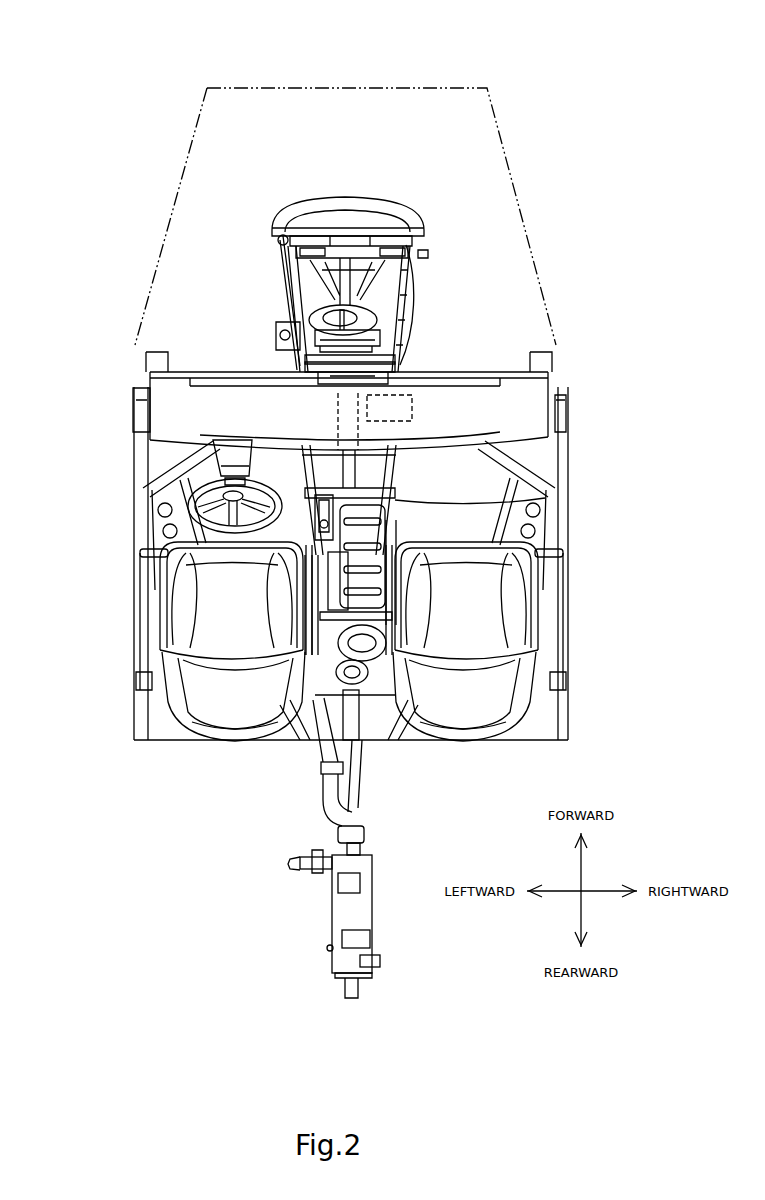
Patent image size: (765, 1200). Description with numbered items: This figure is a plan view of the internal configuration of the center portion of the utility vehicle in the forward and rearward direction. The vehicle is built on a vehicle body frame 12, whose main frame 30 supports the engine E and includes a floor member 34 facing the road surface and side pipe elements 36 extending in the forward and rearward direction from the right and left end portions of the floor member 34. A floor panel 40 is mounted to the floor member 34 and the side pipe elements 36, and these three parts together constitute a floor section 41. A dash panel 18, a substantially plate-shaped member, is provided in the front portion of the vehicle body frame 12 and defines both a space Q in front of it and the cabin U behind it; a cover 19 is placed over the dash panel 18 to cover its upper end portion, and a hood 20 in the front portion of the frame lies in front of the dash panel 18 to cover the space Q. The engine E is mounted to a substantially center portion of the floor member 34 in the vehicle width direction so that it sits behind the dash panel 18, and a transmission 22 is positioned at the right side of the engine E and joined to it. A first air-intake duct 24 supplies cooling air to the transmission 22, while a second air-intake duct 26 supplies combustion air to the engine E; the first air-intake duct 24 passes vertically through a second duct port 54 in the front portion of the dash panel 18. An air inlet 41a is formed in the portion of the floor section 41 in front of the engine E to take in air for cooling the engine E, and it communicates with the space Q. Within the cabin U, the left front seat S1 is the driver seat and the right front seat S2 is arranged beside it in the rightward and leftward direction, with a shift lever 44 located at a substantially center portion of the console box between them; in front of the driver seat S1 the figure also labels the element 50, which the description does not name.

The vehicle body frame 12 is at (577, 530).
The dash panel 18 is at (515, 397).
The cover 19 is at (563, 398).
The hood 20 is at (410, 75).
The transmission 22 is at (413, 583).
The first air-intake duct 24 is at (375, 472).
The second air-intake duct 26 is at (345, 475).
The main frame 30 is at (122, 698).
The floor member 34 is at (393, 487).
The side pipe elements 36 is at (140, 510).
The floor panel 40 is at (400, 560).
The floor section 41 is at (492, 498).
The air inlet 41a is at (321, 461).
The shift lever 44 is at (303, 553).
The steering wheel 50 is at (202, 478).
The second duct port 54 is at (420, 367).
The engine E is at (327, 588).
The space Q is at (480, 196).
The cabin U is at (477, 633).
The left front seat S1 is at (230, 701).
The right front seat S2 is at (470, 701).